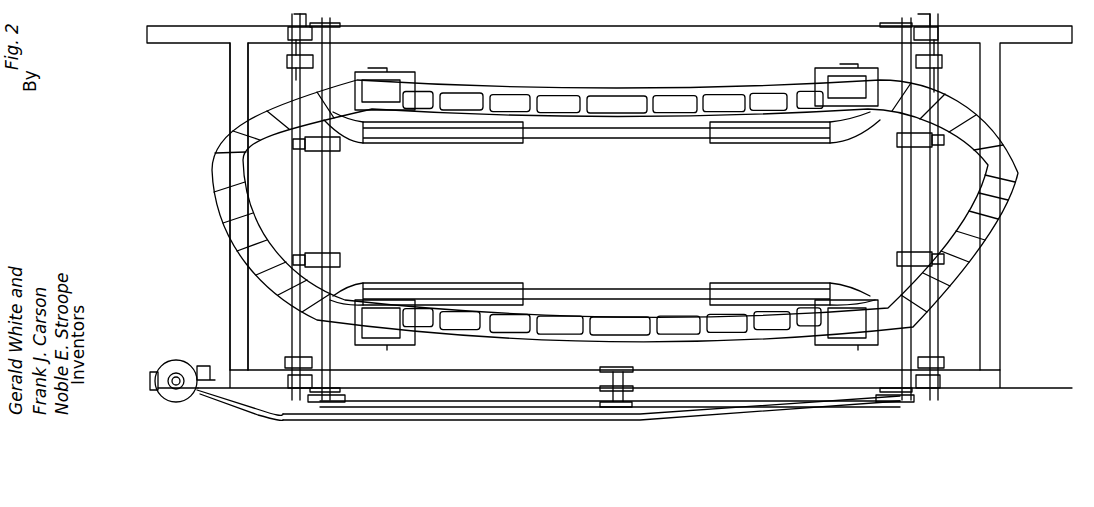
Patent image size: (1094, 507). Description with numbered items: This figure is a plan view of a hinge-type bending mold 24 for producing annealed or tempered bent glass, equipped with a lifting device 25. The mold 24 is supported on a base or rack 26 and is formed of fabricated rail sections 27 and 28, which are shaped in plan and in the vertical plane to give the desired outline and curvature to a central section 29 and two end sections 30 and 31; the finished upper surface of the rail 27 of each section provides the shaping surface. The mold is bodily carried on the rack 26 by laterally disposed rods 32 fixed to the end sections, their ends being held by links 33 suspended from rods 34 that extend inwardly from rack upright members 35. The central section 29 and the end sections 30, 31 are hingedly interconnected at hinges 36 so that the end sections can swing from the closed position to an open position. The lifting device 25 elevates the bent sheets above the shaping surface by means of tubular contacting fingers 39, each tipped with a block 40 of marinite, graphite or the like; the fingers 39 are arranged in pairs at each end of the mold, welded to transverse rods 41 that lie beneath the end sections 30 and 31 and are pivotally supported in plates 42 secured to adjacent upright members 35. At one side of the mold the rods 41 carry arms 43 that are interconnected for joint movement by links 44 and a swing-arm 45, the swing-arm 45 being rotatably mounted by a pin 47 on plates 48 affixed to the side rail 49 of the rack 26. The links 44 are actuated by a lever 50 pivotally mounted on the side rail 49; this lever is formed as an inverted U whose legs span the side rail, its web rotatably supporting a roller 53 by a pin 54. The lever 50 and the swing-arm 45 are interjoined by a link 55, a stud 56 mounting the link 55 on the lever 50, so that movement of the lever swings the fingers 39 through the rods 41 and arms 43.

The bending mold 24 is at (219, 155).
The lifting device 25 is at (196, 350).
The rack 26 is at (240, 78).
The rail section 27 is at (625, 120).
The rail section 28 is at (613, 213).
The central section 29 is at (573, 93).
The end section 30 is at (240, 233).
The end section 31 is at (242, 26).
The laterally disposed rods 32 is at (292, 90).
The links 33 is at (289, 64).
The rods 34 is at (300, 45).
The upright members 35 is at (290, 30).
The hinge 36 is at (415, 76).
The contacting fingers 39 is at (340, 146).
The block 40 is at (332, 152).
The rods 41 is at (332, 208).
The plates 42 is at (340, 25).
The arms 43 is at (325, 402).
The links 44 is at (418, 406).
The swing-arm 45 is at (630, 407).
The pin 47 is at (634, 369).
The plates 48 is at (600, 388).
The side rail 49 is at (264, 384).
The lever 50 is at (225, 404).
The roller 53 is at (172, 394).
The pin 54 is at (182, 388).
The link 55 is at (506, 414).
The stud 56 is at (206, 366).